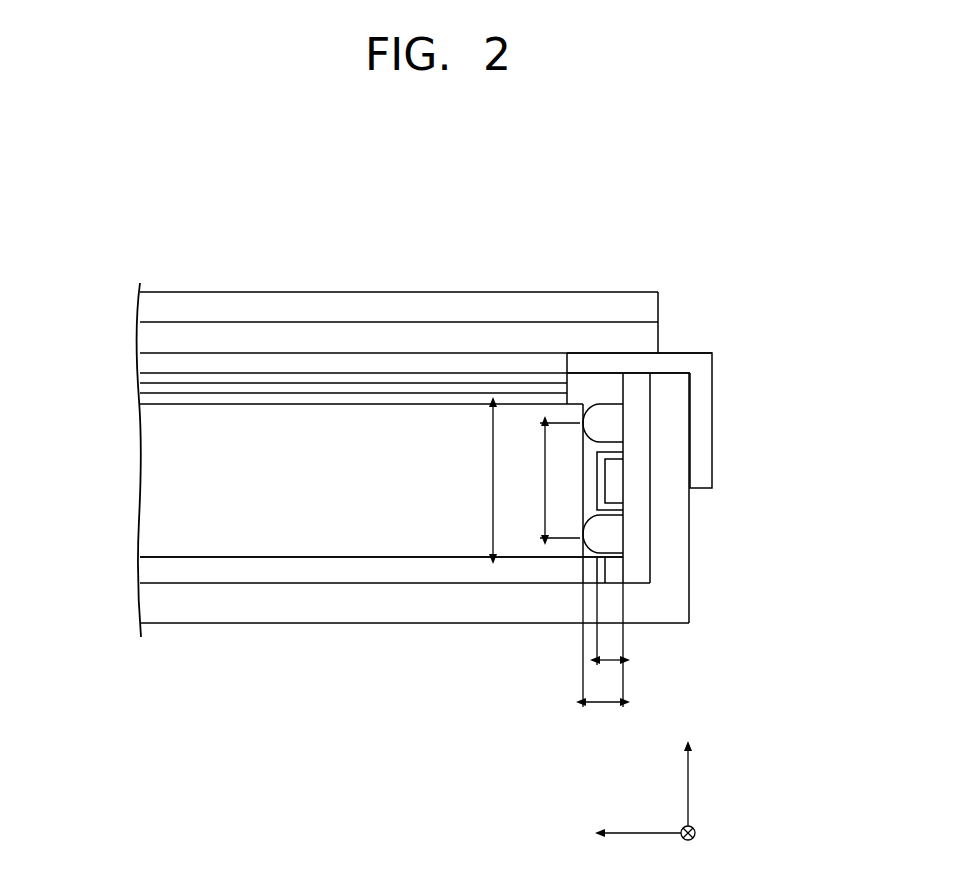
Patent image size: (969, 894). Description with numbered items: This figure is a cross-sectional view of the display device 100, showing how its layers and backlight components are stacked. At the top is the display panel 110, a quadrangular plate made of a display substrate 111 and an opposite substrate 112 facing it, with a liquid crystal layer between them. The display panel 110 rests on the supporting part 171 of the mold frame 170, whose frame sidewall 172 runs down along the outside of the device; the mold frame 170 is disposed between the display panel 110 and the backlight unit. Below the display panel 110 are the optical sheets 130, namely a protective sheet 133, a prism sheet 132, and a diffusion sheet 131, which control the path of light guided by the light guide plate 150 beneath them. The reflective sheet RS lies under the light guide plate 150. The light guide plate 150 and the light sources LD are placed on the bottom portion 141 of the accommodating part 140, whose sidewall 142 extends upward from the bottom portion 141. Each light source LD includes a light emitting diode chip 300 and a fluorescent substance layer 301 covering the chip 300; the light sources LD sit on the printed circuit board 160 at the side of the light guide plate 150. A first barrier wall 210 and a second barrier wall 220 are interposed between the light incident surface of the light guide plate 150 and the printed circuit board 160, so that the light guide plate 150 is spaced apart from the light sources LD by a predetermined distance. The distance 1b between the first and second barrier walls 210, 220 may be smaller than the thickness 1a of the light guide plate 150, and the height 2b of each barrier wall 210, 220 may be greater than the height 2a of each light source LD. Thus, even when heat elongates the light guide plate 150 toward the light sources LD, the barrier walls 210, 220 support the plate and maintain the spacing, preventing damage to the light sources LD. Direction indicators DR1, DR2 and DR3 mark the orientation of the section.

The display device 100 is at (636, 249).
The display panel 110 is at (426, 272).
The display substrate 111 is at (462, 333).
The opposite substrate 112 is at (528, 302).
The optical sheets 130 is at (349, 391).
The diffusion sheet 131 is at (58, 355).
The prism sheet 132 is at (139, 387).
The protective sheet 133 is at (139, 378).
The light guide plate 150 is at (150, 482).
The reflective sheet RS is at (150, 570).
The mold frame 170 is at (706, 410).
The supporting part 171 is at (683, 360).
The frame sidewall 172 is at (741, 430).
The first barrier wall 210 is at (614, 423).
The second barrier wall 220 is at (612, 543).
The light sources LD is at (716, 485).
The light emitting diode chip 300 is at (617, 482).
The fluorescent substance layer 301 is at (625, 455).
The printed circuit board 160 is at (640, 523).
The accommodating part 140 is at (493, 519).
The bottom portion 141 is at (635, 608).
The sidewall 142 is at (678, 570).
The thickness of the light guide plate 1a is at (477, 480).
The distance between the first and second barrier walls 1b is at (547, 480).
The height of each light source 2a is at (603, 645).
The height of each barrier wall 2b is at (603, 716).
The first direction DR1 is at (713, 834).
The second direction DR2 is at (617, 834).
The third direction DR3 is at (688, 772).